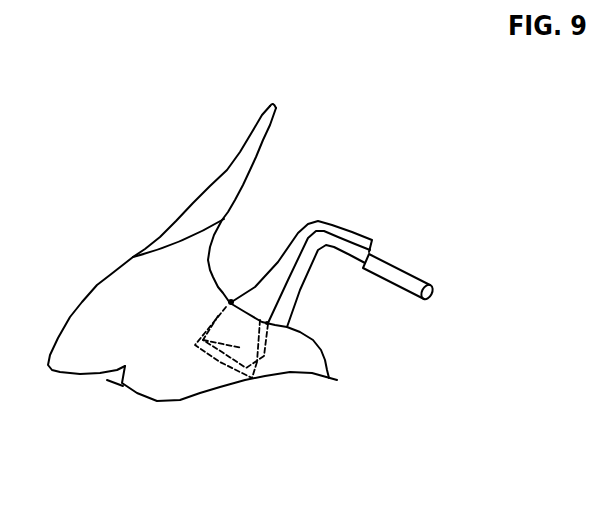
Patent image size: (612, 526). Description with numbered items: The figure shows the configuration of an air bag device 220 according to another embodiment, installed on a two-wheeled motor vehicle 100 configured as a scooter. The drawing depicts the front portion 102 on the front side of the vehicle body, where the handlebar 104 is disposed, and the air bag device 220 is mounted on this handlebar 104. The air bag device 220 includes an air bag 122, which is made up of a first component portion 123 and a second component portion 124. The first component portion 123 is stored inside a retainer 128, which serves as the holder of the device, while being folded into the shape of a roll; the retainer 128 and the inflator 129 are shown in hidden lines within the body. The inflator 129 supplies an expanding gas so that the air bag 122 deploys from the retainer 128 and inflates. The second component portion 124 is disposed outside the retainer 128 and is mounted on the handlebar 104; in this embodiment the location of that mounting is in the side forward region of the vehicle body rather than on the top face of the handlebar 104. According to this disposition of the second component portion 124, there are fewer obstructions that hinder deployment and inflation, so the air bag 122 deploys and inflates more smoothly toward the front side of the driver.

The two-wheeled motor vehicle 100 is at (118, 167).
The front portion 102 is at (148, 410).
The handlebar 104 is at (371, 254).
The air bag 122 is at (305, 210).
The first component portion 123 is at (233, 300).
The second component portion 124 is at (356, 237).
The retainer 128 is at (258, 357).
The inflator 129 is at (219, 318).
The air bag device 220 is at (360, 333).